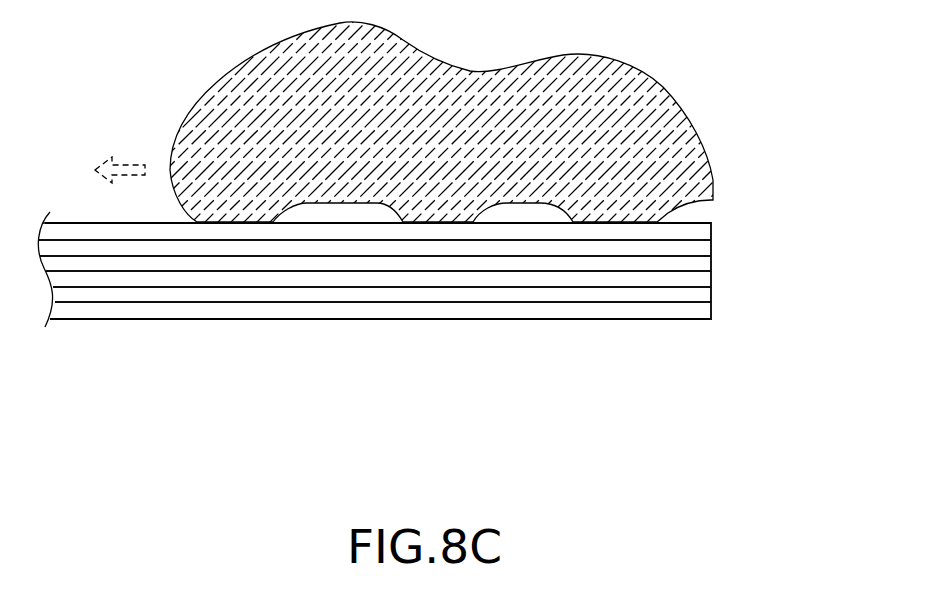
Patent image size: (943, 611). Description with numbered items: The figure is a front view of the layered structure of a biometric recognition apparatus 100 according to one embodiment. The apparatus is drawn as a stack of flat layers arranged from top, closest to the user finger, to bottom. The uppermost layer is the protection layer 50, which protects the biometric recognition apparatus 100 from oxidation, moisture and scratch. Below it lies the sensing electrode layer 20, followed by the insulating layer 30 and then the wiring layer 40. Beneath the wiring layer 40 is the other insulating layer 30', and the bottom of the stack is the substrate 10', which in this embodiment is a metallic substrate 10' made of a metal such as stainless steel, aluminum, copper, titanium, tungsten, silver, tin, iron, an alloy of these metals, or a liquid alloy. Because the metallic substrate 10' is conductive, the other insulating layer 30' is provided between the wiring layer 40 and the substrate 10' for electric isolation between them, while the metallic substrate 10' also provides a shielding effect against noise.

The biometric recognition apparatus 100 is at (537, 322).
The protection layer 50 is at (697, 232).
The sensing electrode layer 20 is at (700, 249).
The insulating layer 30 is at (435, 257).
The wiring layer 40 is at (700, 279).
The other insulating layer 30' is at (444, 321).
The substrate 10' is at (382, 361).